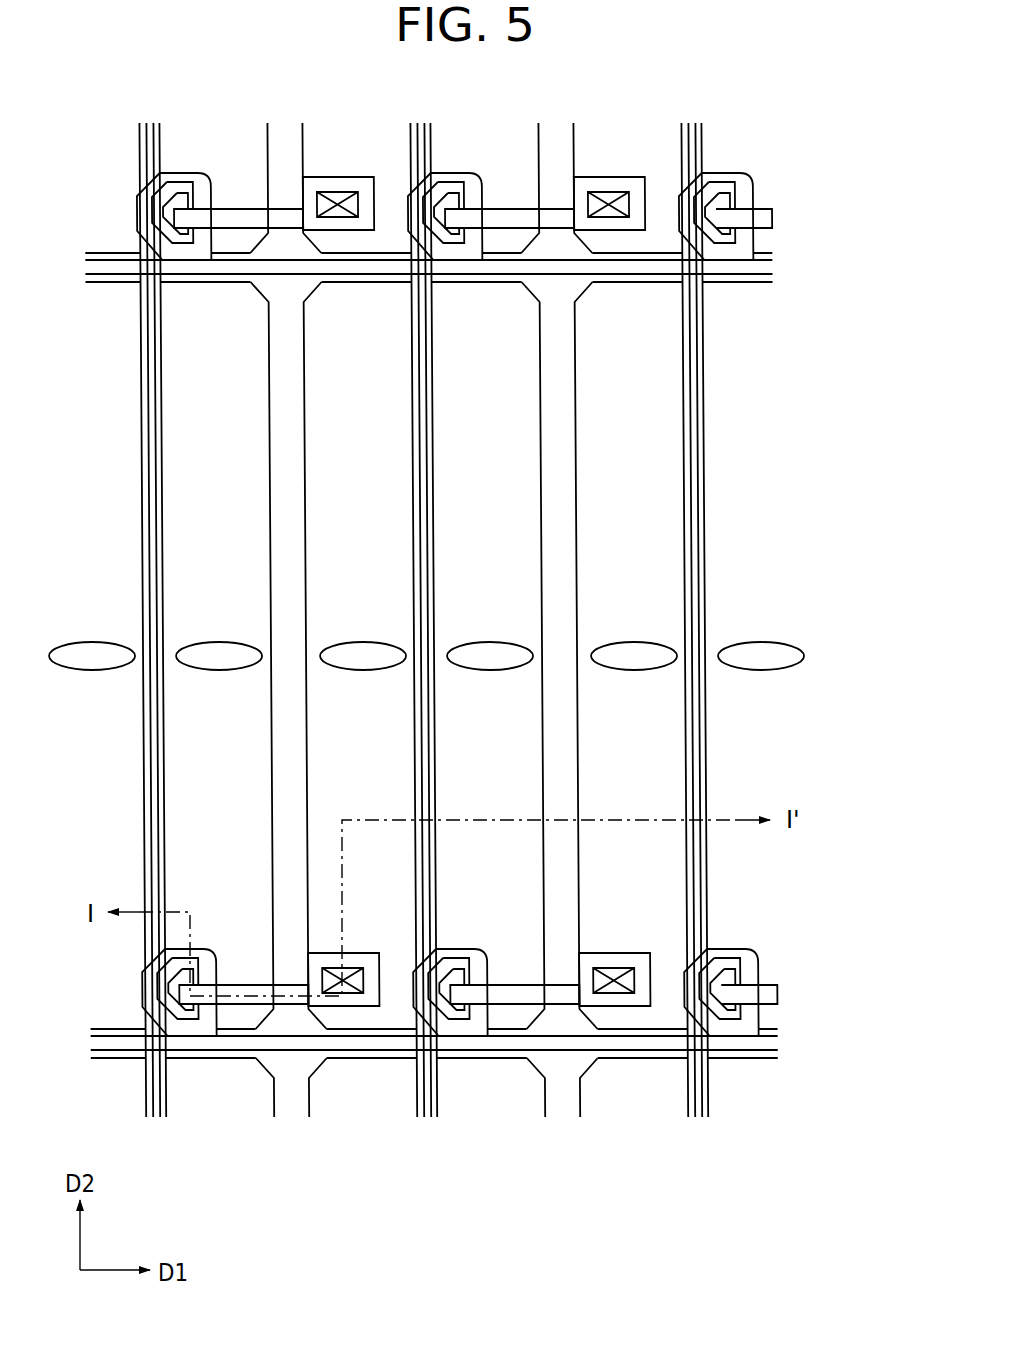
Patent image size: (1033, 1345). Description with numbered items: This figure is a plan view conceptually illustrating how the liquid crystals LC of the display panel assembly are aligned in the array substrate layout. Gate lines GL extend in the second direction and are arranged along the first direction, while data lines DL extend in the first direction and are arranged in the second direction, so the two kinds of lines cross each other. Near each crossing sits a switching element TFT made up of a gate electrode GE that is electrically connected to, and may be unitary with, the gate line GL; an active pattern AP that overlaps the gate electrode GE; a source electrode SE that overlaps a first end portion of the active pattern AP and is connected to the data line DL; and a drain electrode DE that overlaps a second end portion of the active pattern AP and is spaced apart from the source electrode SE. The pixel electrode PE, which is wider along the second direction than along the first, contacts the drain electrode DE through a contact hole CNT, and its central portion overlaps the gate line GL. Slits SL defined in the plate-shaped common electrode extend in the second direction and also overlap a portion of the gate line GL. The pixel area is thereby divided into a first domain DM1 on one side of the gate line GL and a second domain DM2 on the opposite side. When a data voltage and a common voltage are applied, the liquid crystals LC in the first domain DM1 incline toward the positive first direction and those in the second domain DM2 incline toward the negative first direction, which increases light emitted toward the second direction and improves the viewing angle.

The first domain DM1 is at (330, 419).
The second domain DM2 is at (510, 381).
The pixel electrode PE is at (647, 465).
The slits SL is at (698, 523).
The gate line GL is at (703, 574).
The liquid crystals LC is at (805, 655).
The contact hole CNT is at (610, 998).
The data line DL is at (666, 1052).
The source electrode SE is at (425, 965).
The active pattern AP is at (453, 1012).
The gate electrode GE is at (488, 1015).
The drain electrode DE is at (526, 1012).
The switching element TFT is at (537, 1186).